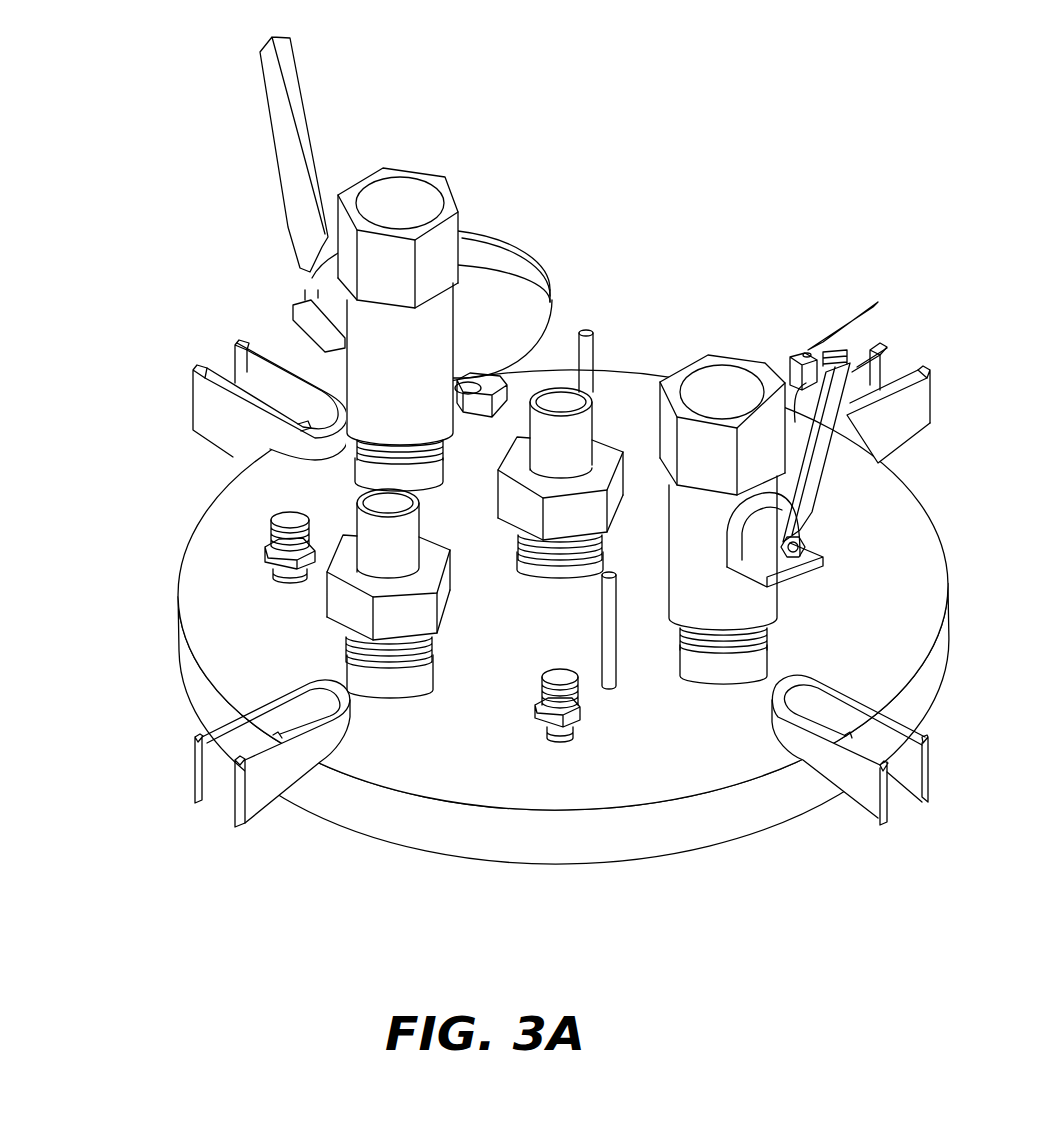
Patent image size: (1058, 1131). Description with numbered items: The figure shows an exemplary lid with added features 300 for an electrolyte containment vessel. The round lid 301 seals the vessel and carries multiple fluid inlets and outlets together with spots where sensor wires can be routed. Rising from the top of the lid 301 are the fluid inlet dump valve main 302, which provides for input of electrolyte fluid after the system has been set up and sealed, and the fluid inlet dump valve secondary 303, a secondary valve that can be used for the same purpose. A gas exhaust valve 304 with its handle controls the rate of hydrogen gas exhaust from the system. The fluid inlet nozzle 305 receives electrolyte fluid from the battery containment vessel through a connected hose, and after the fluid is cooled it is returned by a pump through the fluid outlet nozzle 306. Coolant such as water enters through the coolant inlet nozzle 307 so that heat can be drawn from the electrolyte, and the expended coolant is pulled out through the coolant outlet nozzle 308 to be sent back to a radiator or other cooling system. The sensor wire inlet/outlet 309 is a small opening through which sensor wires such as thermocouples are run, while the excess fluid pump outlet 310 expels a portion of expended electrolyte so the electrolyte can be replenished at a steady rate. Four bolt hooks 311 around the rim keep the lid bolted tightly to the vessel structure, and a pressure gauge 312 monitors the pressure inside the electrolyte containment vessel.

The lid with added features 300 is at (724, 152).
The lid 301 is at (742, 788).
The fluid inlet dump valve main 302 is at (733, 352).
The fluid inlet dump valve secondary 303 is at (410, 170).
The gas exhaust valve 304 is at (873, 302).
The fluid inlet nozzle 305 is at (553, 388).
The fluid outlet nozzle 306 is at (356, 505).
The coolant inlet nozzle 307 is at (618, 577).
The coolant outlet nozzle 308 is at (588, 331).
The sensor wire inlet/outlet 309 is at (263, 540).
The excess fluid pump outlet 310 is at (552, 728).
The bolt hooks 311 is at (197, 736).
The pressure gauge 312 is at (490, 223).